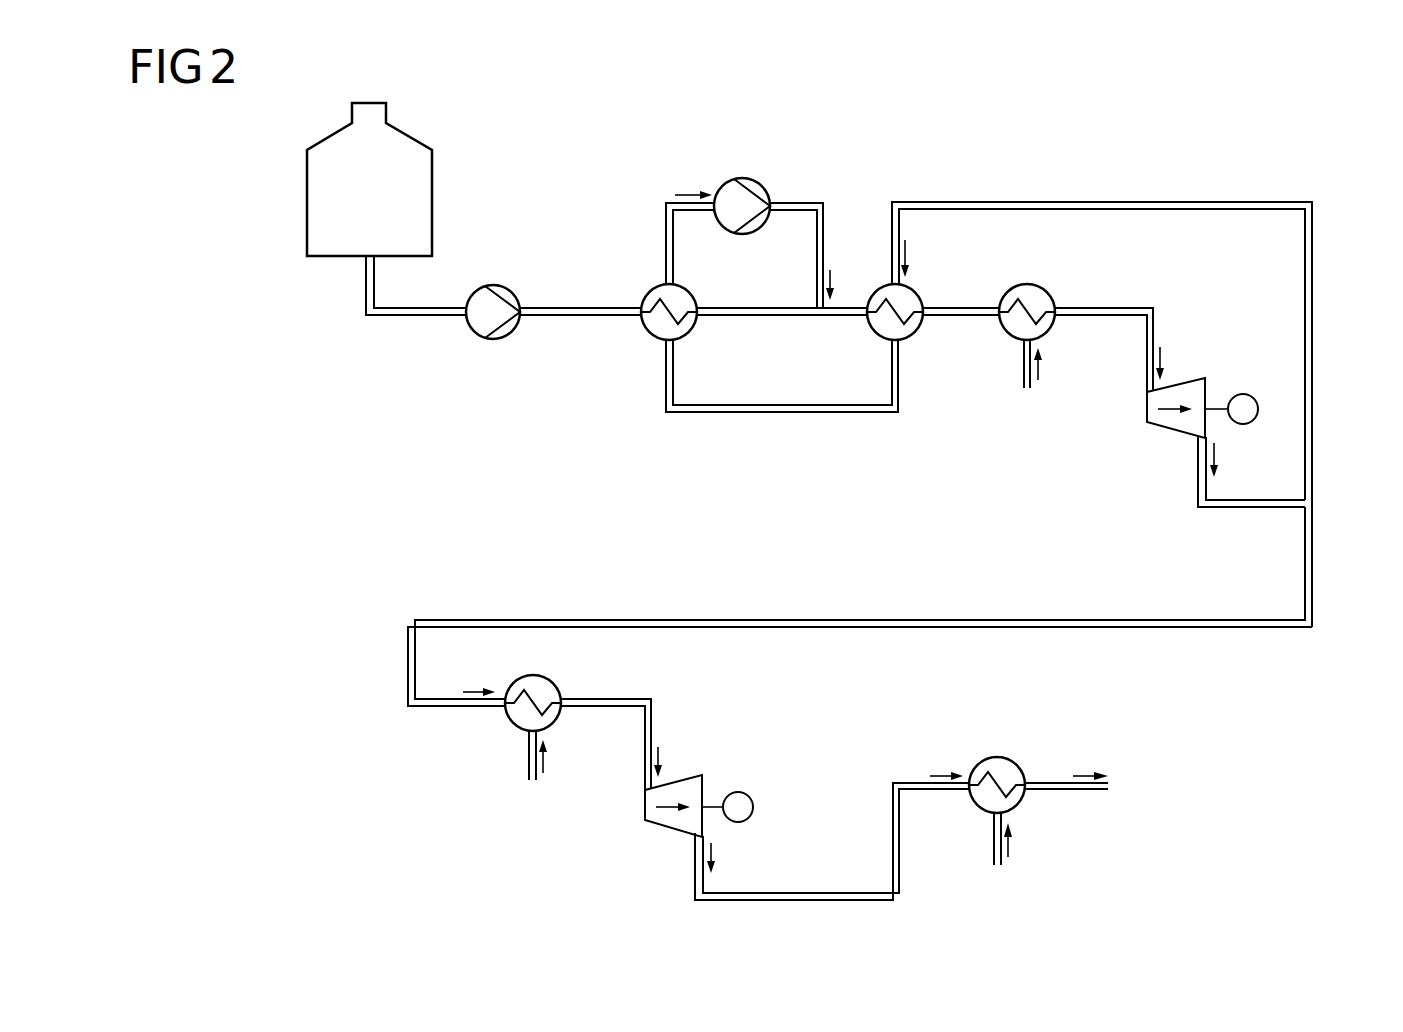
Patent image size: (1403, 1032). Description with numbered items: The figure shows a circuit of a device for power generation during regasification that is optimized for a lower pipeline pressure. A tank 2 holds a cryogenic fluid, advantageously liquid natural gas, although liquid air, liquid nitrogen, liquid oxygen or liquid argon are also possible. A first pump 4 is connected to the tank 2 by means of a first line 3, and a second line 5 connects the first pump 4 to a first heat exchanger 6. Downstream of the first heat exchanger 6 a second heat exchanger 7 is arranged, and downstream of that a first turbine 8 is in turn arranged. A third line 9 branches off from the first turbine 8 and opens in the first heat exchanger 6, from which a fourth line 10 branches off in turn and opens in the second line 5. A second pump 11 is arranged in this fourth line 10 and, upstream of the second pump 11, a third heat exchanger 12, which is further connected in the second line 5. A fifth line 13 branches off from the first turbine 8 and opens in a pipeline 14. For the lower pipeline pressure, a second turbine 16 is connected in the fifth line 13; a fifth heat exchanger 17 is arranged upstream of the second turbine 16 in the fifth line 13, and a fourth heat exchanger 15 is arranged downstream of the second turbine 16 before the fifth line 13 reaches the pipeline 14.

The tank 2 is at (324, 196).
The first line 3 is at (412, 313).
The first pump 4 is at (488, 338).
The second line 5 is at (771, 316).
The first heat exchanger 6 is at (913, 336).
The second heat exchanger 7 is at (1013, 336).
The first turbine 8 is at (1165, 437).
The third line 9 is at (1312, 333).
The fourth line 10 is at (800, 413).
The second pump 11 is at (730, 178).
The third heat exchanger 12 is at (651, 334).
The fifth line 13 is at (1312, 562).
The pipeline 14 is at (1080, 790).
The fourth heat exchanger 15 is at (980, 813).
The second turbine 16 is at (668, 836).
The fifth heat exchanger 17 is at (512, 731).